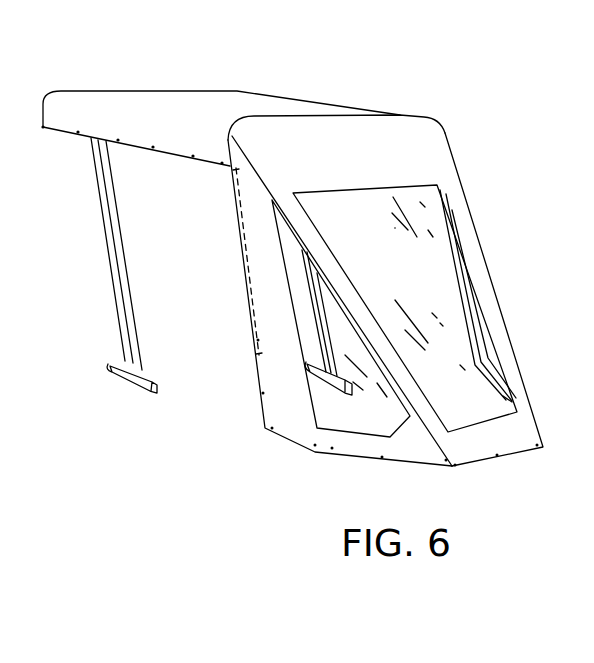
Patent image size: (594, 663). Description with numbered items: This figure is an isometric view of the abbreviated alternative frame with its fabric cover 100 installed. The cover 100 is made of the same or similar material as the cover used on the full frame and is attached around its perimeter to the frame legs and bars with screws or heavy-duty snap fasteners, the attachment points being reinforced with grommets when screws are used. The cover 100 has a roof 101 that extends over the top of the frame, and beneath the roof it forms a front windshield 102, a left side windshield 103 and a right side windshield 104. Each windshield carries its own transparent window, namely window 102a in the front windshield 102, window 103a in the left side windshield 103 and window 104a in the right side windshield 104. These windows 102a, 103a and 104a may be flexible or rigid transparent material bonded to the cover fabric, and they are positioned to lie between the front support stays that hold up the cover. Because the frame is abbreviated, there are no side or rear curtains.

The cover 100 is at (460, 123).
The roof 101 is at (237, 102).
The front windshield 102 is at (423, 165).
The transparent window 102a is at (477, 395).
The left side windshield 103 is at (488, 353).
The transparent window 103a is at (511, 336).
The right side windshield 104 is at (277, 366).
The transparent window 104a is at (360, 420).